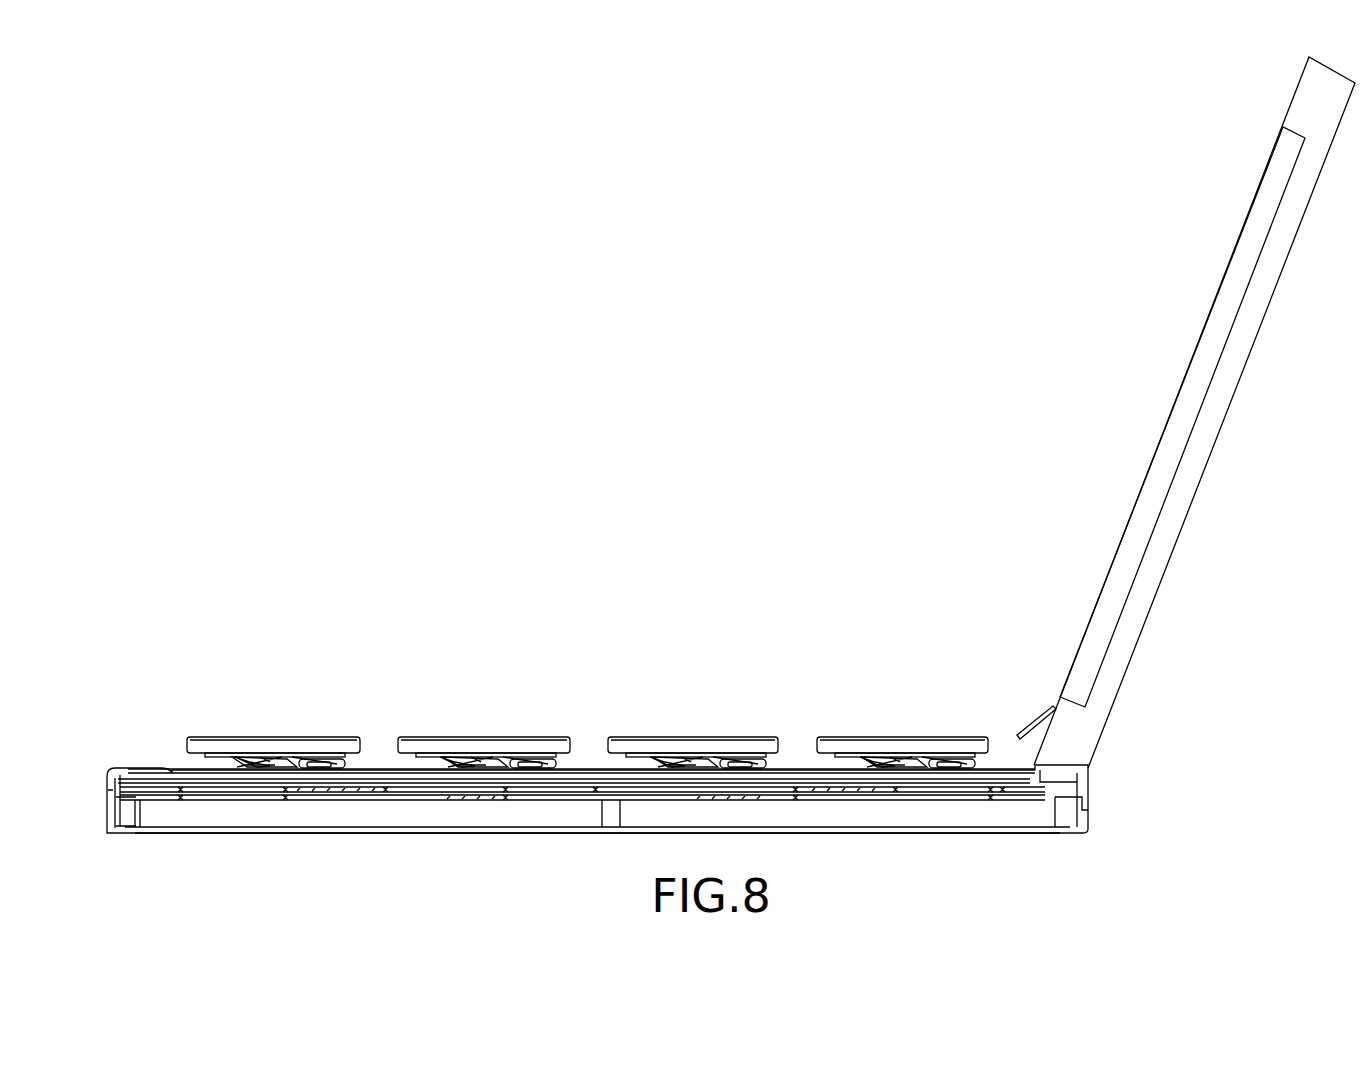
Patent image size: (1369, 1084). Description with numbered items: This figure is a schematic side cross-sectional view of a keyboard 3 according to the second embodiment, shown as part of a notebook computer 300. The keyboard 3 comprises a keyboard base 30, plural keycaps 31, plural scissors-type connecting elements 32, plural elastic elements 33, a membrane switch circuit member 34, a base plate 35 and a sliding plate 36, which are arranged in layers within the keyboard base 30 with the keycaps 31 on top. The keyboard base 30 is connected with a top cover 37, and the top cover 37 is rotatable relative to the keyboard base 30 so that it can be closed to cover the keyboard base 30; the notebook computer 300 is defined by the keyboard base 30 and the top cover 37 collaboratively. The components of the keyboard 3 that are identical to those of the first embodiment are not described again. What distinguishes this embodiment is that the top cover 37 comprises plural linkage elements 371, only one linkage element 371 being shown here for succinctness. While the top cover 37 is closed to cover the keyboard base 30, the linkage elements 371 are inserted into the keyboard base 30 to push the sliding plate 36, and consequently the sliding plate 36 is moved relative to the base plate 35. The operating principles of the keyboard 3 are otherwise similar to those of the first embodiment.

The notebook computer 300 is at (415, 417).
The keyboard 3 is at (587, 725).
The keyboard base 30 is at (107, 800).
The keycap 31 is at (553, 745).
The scissors-type connecting element 32 is at (483, 757).
The elastic element 33 is at (462, 759).
The membrane switch circuit member 34 is at (815, 769).
The base plate 35 is at (855, 775).
The sliding plate 36 is at (917, 779).
The top cover 37 is at (1328, 112).
The linkage element 371 is at (1035, 722).